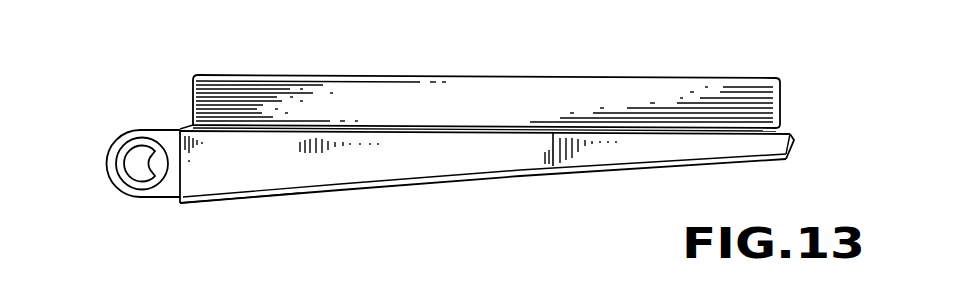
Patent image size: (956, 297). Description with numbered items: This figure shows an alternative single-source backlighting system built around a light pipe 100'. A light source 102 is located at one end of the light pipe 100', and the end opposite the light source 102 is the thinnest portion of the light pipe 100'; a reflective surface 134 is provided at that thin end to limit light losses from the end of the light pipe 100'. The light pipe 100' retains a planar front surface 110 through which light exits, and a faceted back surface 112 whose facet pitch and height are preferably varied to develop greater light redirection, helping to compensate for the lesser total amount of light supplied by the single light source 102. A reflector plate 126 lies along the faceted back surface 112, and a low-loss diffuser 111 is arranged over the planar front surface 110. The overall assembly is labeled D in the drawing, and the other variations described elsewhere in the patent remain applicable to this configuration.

The blade cartridge D is at (663, 78).
The light pipe 100' is at (485, 197).
The light source 102 is at (128, 190).
The planar front surface 110 is at (425, 130).
The low-loss diffuser 111 is at (188, 123).
The faceted back surface 112 is at (378, 183).
The reflector plate 126 is at (254, 203).
The reflective surface 134 is at (797, 139).